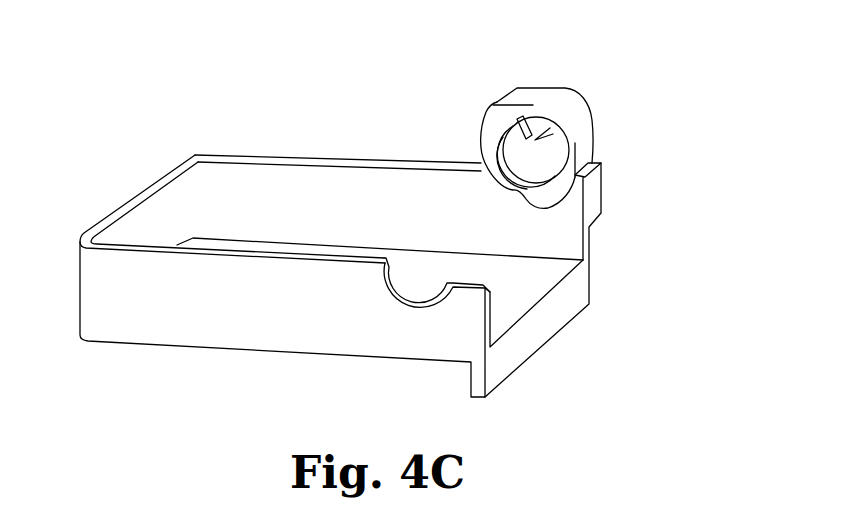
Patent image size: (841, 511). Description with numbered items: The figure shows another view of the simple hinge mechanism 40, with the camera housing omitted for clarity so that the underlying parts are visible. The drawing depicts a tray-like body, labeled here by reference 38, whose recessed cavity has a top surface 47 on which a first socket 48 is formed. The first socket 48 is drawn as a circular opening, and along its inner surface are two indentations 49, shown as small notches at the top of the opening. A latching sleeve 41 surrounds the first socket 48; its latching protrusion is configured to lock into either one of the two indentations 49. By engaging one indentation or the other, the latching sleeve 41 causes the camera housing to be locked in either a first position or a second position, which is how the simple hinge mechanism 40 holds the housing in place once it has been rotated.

The tray body 38 is at (232, 181).
The simple hinge mechanism 40 is at (387, 217).
The latching sleeve 41 is at (479, 160).
The top surface 47 is at (380, 228).
The first socket 48 is at (533, 153).
The indentations 49 is at (533, 122).